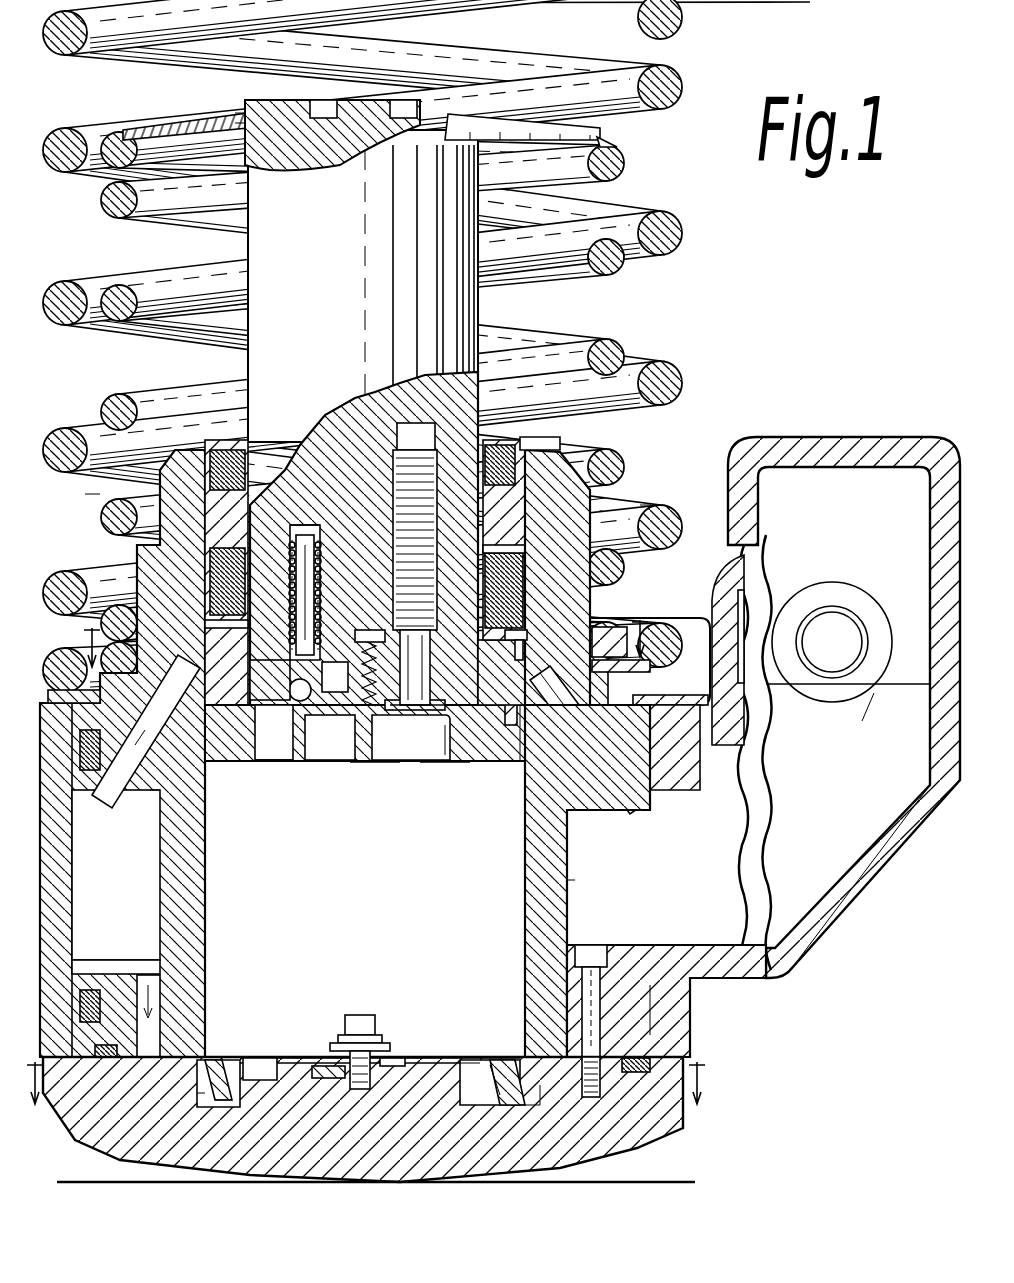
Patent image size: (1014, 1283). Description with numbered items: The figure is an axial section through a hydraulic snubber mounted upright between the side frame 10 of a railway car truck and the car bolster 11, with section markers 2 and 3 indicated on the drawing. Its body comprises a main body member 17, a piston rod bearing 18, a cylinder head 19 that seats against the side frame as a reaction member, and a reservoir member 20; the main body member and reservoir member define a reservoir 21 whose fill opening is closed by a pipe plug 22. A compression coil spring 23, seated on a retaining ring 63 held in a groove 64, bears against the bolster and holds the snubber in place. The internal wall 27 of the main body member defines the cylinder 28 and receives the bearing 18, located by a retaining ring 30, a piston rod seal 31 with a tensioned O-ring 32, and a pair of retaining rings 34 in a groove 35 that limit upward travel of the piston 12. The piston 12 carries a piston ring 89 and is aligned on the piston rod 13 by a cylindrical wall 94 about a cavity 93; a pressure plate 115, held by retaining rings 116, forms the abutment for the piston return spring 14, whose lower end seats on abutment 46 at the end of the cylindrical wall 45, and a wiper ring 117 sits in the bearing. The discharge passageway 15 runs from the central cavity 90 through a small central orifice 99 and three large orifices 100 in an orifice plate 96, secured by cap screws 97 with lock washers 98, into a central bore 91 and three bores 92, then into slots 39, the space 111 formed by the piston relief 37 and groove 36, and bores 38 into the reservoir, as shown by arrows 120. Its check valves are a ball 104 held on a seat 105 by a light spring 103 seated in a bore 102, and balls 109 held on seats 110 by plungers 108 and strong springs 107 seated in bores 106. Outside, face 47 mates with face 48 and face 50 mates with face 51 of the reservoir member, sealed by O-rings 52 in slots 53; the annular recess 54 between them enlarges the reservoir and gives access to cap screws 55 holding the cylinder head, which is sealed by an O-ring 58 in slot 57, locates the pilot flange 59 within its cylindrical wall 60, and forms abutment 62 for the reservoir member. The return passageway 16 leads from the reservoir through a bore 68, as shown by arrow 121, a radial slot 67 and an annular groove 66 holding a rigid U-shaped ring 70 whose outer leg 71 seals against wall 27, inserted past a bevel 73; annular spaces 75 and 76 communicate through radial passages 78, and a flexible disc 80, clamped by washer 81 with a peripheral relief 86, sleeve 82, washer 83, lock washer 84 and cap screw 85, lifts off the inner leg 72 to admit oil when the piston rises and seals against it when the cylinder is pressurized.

The section line 2- 2 is at (366, 1094).
The section line 3- 3 is at (360, 640).
The side frame 10 is at (652, 1182).
The car bolster 11 is at (772, 3).
The piston 12 is at (471, 779).
The piston rod 13 is at (490, 305).
The piston return spring 14 is at (603, 575).
The discharge passageway 15 is at (101, 814).
The return passageway 16 is at (160, 1033).
The main body member 17 is at (143, 494).
The piston rod bearing 18 is at (535, 508).
The cylinder head 19 is at (577, 1170).
The reservoir member 20 is at (779, 976).
The reservoir 21 is at (800, 945).
The pipe plug 22 is at (847, 654).
The compression coil spring 23 is at (658, 500).
The internal wall 27 is at (540, 928).
The cylinder 28 is at (535, 870).
The retaining ring 30 is at (530, 440).
The piston rod seal 31 is at (525, 562).
The tensioned O-ring 32 is at (528, 598).
The retaining rings 34 is at (532, 634).
The groove 35 is at (538, 648).
The groove 36 is at (510, 672).
The relief 37 is at (485, 740).
The bores 38 is at (100, 805).
The slots 39 is at (226, 572).
The cylindrical wall 45 is at (150, 548).
The abutment 46 is at (665, 640).
The face 47 is at (672, 770).
The cylindrical face 48 is at (680, 757).
The cylindrical face 50 is at (690, 1048).
The face 51 is at (655, 1016).
The O-rings 52 is at (648, 732).
The slots 53 is at (635, 805).
The recess 54 is at (580, 890).
The cap screws 55 is at (625, 950).
The annular slot 57 is at (635, 1070).
The O-ring 58 is at (610, 1085).
The pilot flange 59 is at (522, 1050).
The cylindrical wall 60 is at (540, 1085).
The abutment 62 is at (68, 1070).
The retaining ring 63 is at (685, 698).
The groove 64 is at (612, 690).
The annular groove 66 is at (460, 1063).
The radial slot 67 is at (164, 1081).
The bore 68 is at (204, 975).
The ring 70 is at (228, 1055).
The leg 71 is at (225, 1058).
The second leg 72 is at (495, 1058).
The bevel 73 is at (518, 1060).
The annular space 75 is at (197, 1093).
The annular space 76 is at (243, 1092).
The radial passages 78 is at (222, 1105).
The flexible disc 80 is at (272, 1057).
The washer 81 is at (395, 1057).
The sleeve 82 is at (385, 1040).
The washer 83 is at (328, 1057).
The lock washer 84 is at (345, 1035).
The cap screw 85 is at (355, 1018).
The relief 86 is at (392, 1090).
The piston ring 89 is at (525, 735).
The central cavity 90 is at (262, 760).
The central bore 91 is at (388, 662).
The bores 92 is at (352, 676).
The cavity 93 is at (228, 660).
The cylindrical wall 94 is at (295, 640).
The orifice plate 96 is at (455, 762).
The cap screws 97 is at (400, 765).
The lock washers 98 is at (440, 730).
The central orifice 99 is at (378, 736).
The large orifices 100 is at (262, 735).
The bore 102 is at (385, 625).
The spring 103 is at (358, 652).
The ball 104 is at (330, 737).
The seat 105 is at (417, 710).
The bores 106 is at (312, 535).
The springs 107 is at (315, 490).
The plungers 108 is at (325, 565).
The balls 109 is at (292, 690).
The seats 110 is at (279, 745).
The space 111 is at (200, 645).
The pressure plate 115 is at (163, 120).
The retaining rings 116 is at (240, 110).
The piston rod wiper ring 117 is at (500, 452).
The arrows 120 is at (205, 770).
The arrow 121 is at (160, 992).